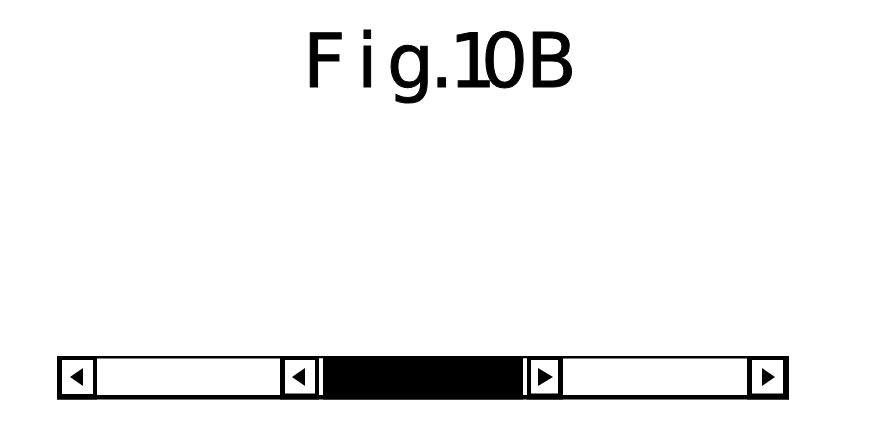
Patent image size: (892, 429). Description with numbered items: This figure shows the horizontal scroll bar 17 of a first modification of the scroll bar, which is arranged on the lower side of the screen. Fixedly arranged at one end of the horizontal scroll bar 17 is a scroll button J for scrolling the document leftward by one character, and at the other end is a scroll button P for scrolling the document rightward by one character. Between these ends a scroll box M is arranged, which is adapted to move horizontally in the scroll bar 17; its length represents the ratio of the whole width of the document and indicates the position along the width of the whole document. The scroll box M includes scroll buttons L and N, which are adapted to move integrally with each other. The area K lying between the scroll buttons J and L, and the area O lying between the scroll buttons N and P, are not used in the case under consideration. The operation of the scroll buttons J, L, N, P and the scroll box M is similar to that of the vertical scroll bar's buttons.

The horizontal scroll bar 17 is at (423, 268).
The scroll button J is at (77, 352).
The area K is at (188, 349).
The scroll button L is at (299, 352).
The scroll box M is at (423, 352).
The scroll button N is at (545, 352).
The area O is at (655, 349).
The scroll button P is at (768, 352).